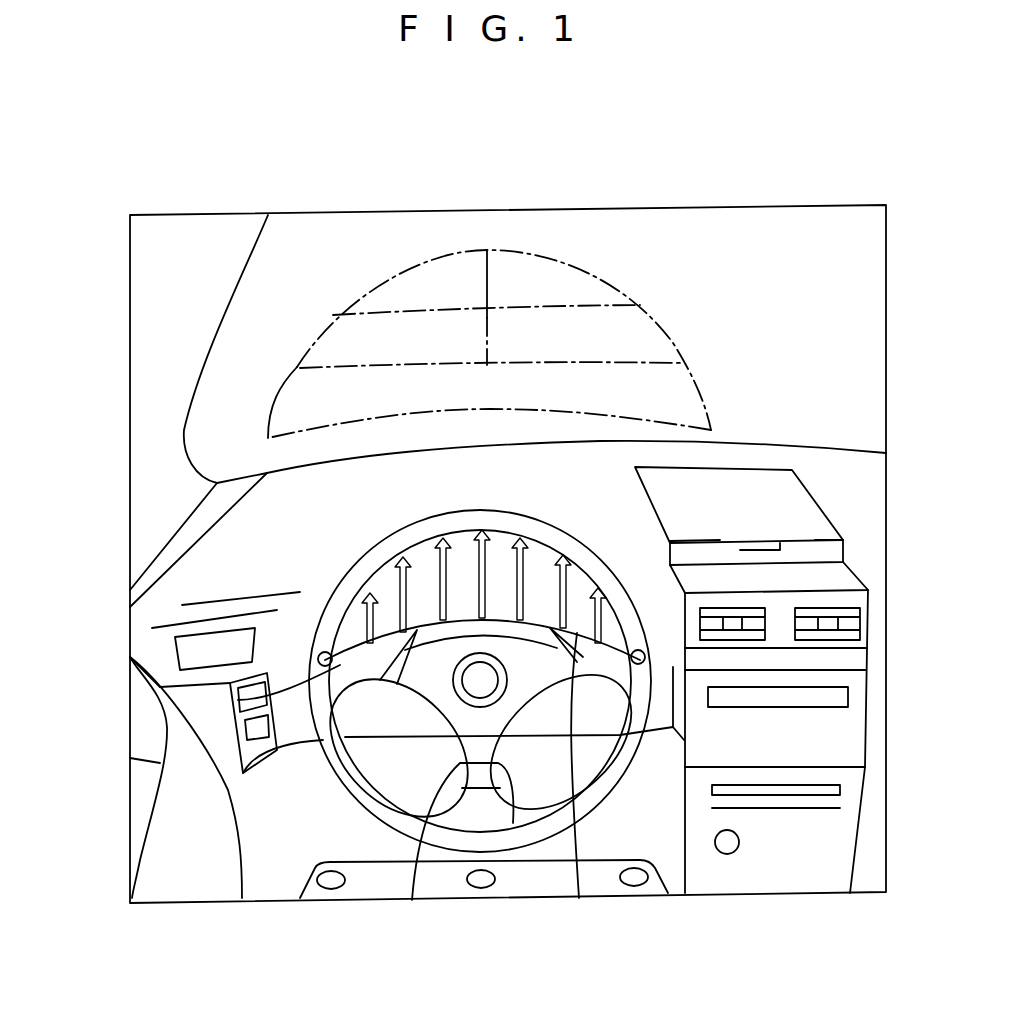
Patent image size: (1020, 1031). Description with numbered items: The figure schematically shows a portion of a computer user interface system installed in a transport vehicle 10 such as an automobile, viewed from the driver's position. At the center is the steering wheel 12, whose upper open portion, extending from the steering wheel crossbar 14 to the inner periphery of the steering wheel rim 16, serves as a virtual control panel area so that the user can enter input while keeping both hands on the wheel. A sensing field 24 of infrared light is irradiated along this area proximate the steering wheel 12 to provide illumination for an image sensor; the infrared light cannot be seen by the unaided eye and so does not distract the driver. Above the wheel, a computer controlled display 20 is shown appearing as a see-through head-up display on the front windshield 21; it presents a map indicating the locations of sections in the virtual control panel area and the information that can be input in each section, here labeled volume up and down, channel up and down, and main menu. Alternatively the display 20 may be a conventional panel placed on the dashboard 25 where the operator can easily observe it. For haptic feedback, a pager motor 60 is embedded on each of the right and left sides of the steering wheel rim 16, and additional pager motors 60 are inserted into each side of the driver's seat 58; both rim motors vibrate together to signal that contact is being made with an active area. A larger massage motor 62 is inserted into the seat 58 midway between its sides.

The transport vehicle 10 is at (888, 196).
The steering wheel 12 is at (422, 880).
The steering wheel crossbar 14 is at (578, 880).
The steering wheel rim 16 is at (380, 583).
The computer controlled display 20 is at (613, 283).
The front windshield 21 is at (220, 317).
The sensing field 24 is at (433, 567).
The dashboard 25 is at (153, 642).
The seat 58 is at (262, 888).
The pager motor 60 is at (238, 700).
The massage motor 62 is at (480, 889).